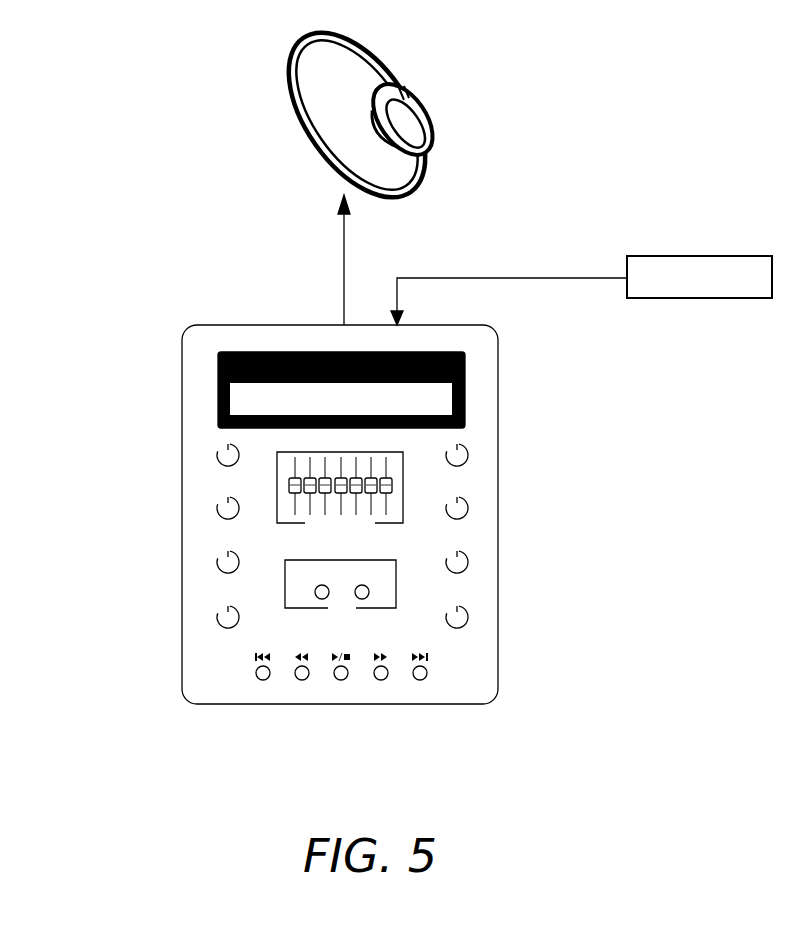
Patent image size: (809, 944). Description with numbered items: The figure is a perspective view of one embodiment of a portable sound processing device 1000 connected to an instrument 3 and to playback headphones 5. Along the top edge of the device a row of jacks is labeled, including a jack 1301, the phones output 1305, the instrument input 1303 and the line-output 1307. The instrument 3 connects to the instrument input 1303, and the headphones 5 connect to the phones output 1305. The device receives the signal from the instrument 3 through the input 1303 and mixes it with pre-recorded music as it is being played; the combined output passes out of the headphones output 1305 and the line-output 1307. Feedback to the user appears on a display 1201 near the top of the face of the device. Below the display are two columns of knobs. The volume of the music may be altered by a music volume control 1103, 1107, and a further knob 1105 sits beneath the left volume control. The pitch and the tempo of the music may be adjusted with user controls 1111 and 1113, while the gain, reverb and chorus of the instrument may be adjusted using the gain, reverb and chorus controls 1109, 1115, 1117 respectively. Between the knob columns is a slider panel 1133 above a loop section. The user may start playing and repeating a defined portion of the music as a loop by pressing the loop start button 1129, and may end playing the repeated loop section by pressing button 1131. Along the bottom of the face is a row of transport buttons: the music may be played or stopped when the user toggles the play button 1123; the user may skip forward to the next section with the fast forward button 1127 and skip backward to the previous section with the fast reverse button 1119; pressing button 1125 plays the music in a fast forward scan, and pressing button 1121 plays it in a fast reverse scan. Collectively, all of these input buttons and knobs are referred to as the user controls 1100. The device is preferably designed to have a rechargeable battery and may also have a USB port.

The playback headphones 5 is at (408, 101).
The instrument 3 is at (773, 268).
The portable sound processing device 1000 is at (449, 394).
The user controls 1100 is at (468, 674).
The display 1201 is at (450, 398).
The power port 1301 is at (278, 325).
The phones output 1305 is at (335, 323).
The instrument input 1303 is at (389, 325).
The line-output 1307 is at (442, 325).
The music volume control 1103 is at (218, 455).
The balance knob 1105 is at (218, 508).
The pitch control 1111 is at (218, 562).
The tempo control 1113 is at (218, 617).
The music volume control 1107 is at (468, 455).
The gain control 1109 is at (468, 508).
The reverb control 1115 is at (468, 562).
The chorus control 1117 is at (468, 617).
The equalizer sliders 1133 is at (325, 483).
The loop start button 1129 is at (317, 597).
The loop end button 1131 is at (358, 598).
The fast reverse button 1119 is at (263, 680).
The fast reverse scan button 1121 is at (302, 680).
The play button 1123 is at (341, 680).
The fast forward scan button 1125 is at (381, 680).
The fast forward button 1127 is at (420, 680).